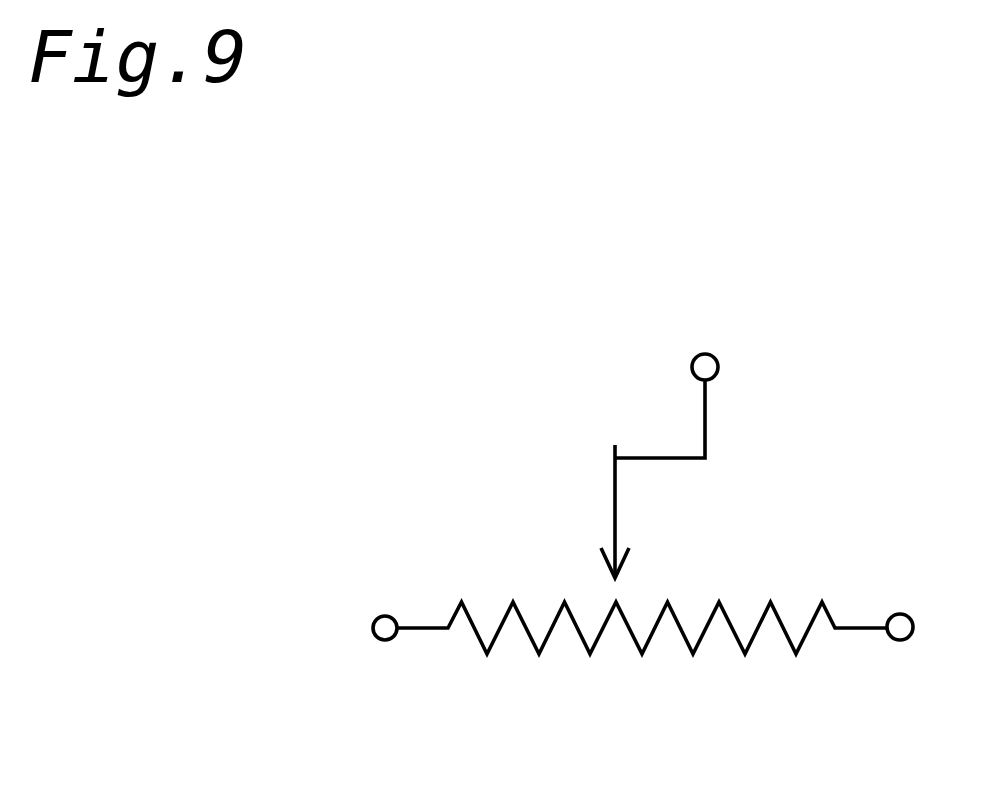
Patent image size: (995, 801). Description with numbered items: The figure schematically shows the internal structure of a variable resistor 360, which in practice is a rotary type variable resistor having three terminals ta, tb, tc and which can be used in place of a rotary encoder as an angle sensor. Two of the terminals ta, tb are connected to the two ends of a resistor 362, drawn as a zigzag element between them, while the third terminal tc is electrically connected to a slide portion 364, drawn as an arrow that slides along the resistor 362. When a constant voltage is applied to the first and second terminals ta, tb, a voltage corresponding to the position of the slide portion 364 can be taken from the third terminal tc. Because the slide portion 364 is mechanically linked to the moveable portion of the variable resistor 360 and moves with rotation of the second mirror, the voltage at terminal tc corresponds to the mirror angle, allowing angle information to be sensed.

The variable resistor 360 is at (443, 368).
The resistor 362 is at (771, 600).
The slide portion 364 is at (612, 488).
The first terminal ta is at (381, 616).
The second terminal tb is at (897, 613).
The third terminal tc is at (718, 365).